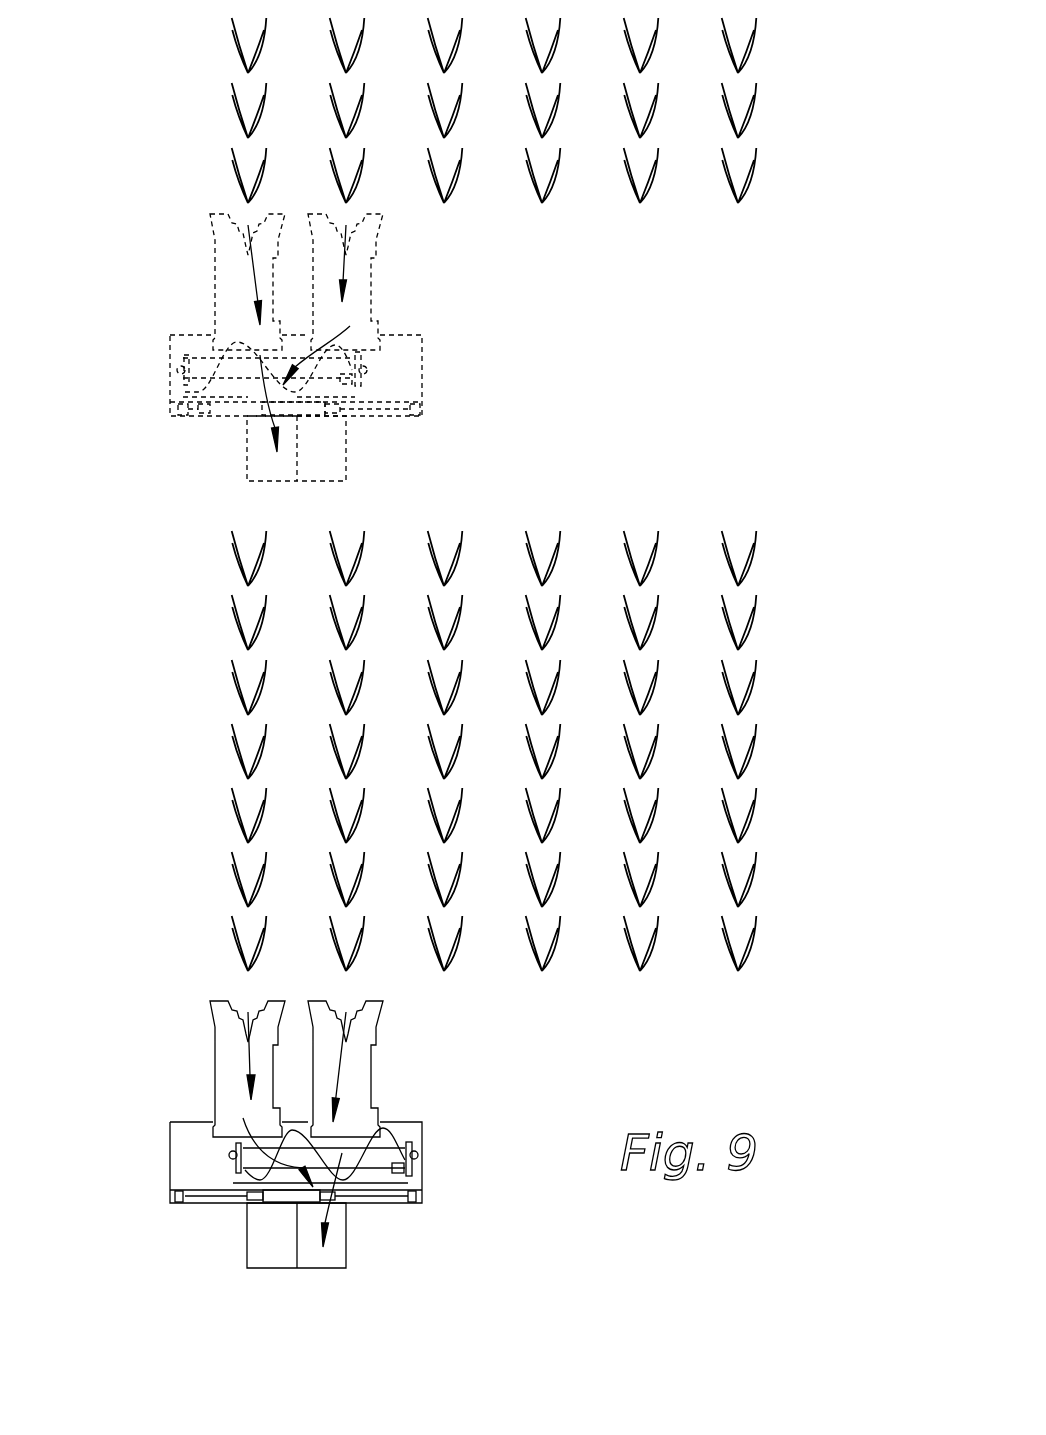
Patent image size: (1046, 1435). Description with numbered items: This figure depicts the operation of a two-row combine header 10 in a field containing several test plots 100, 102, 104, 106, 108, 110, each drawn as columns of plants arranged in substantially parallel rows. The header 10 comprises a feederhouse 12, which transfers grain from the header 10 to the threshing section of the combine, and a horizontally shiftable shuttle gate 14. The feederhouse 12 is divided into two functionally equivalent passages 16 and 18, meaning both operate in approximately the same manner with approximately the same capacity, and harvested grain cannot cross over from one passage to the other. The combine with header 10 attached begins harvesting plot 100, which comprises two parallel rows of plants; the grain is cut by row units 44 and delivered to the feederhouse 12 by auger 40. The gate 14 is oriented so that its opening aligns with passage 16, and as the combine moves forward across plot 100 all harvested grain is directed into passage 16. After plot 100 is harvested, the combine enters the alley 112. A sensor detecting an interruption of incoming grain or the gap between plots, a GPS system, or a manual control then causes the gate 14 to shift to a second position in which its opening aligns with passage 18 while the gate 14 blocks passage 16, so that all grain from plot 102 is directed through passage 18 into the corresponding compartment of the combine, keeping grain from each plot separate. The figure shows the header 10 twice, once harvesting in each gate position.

The combine header 10 is at (136, 1177).
The feederhouse 12 is at (316, 859).
The shuttle gate 14 is at (383, 1183).
The feederhouse passage 16 is at (338, 1253).
The feederhouse passage 18 is at (267, 1258).
The auger 40 is at (393, 1157).
The row units 44 is at (230, 1060).
The test plot 100 is at (298, 751).
The test plot 102 is at (298, 110).
The test plot 104 is at (494, 751).
The test plot 106 is at (494, 110).
The test plot 108 is at (690, 751).
The test plot 110 is at (690, 110).
The alley 112 is at (650, 364).